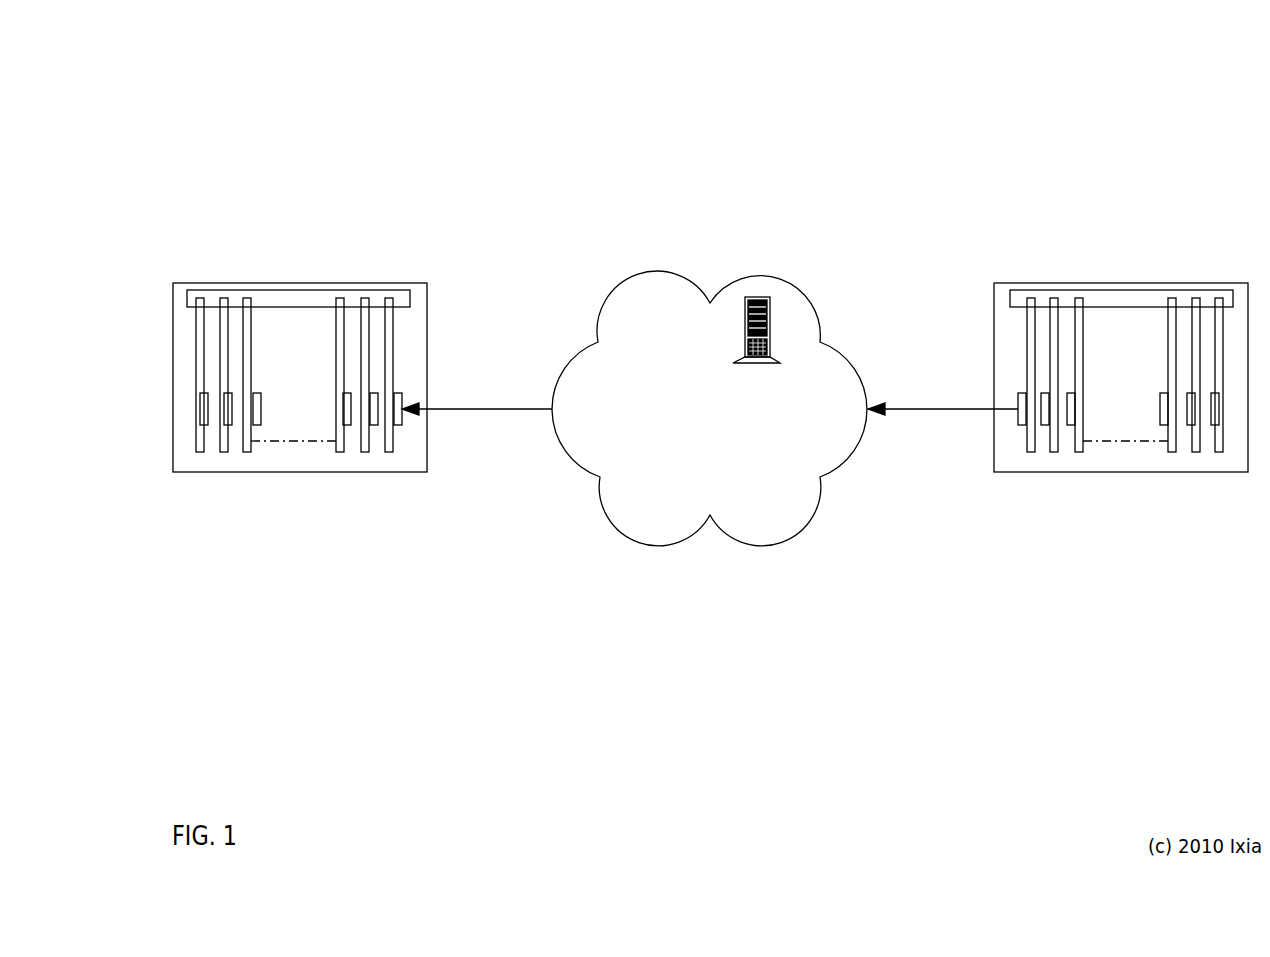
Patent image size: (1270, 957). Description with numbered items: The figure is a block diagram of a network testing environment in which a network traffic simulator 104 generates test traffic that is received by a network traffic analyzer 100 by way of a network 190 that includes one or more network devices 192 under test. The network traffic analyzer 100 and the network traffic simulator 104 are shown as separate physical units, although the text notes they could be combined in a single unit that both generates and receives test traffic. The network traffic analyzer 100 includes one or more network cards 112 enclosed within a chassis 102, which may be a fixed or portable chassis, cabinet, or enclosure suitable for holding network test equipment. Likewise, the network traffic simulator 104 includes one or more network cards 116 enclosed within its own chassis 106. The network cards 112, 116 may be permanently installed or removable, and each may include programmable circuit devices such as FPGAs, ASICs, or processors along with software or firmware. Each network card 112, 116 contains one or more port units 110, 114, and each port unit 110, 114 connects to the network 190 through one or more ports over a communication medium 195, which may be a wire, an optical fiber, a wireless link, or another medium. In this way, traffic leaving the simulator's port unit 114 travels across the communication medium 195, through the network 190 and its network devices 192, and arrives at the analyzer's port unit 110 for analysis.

The network traffic analyzer 100 is at (387, 373).
The chassis 102 is at (396, 415).
The network traffic simulator 104 is at (1031, 369).
The chassis 106 is at (1024, 415).
The port unit 110 is at (398, 425).
The network card 112 is at (390, 452).
The port unit 114 is at (939, 478).
The network card 116 is at (1030, 452).
The network 190 is at (709, 381).
The network device 192 is at (757, 297).
The communication medium 195 is at (513, 409).